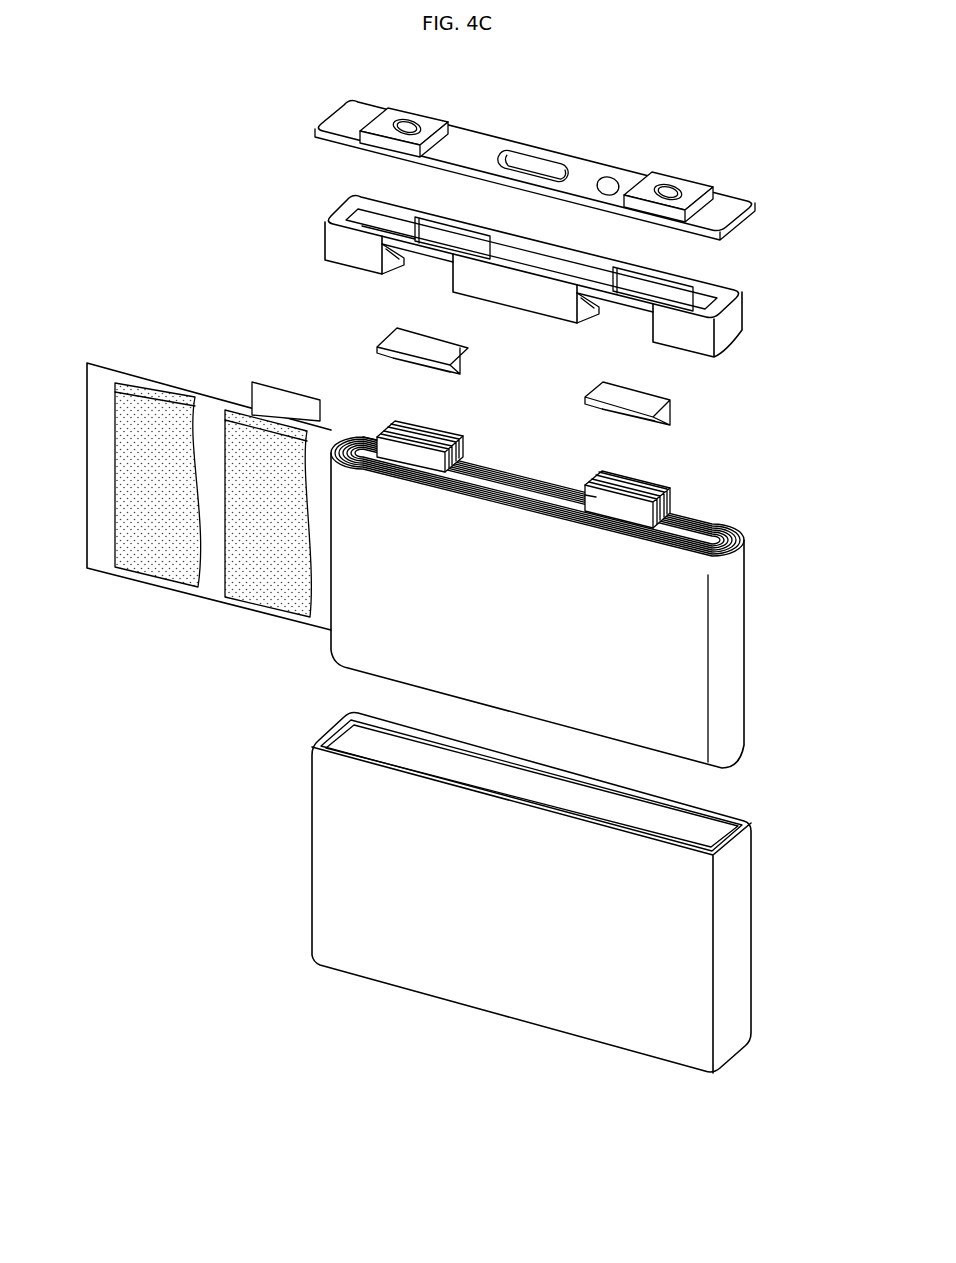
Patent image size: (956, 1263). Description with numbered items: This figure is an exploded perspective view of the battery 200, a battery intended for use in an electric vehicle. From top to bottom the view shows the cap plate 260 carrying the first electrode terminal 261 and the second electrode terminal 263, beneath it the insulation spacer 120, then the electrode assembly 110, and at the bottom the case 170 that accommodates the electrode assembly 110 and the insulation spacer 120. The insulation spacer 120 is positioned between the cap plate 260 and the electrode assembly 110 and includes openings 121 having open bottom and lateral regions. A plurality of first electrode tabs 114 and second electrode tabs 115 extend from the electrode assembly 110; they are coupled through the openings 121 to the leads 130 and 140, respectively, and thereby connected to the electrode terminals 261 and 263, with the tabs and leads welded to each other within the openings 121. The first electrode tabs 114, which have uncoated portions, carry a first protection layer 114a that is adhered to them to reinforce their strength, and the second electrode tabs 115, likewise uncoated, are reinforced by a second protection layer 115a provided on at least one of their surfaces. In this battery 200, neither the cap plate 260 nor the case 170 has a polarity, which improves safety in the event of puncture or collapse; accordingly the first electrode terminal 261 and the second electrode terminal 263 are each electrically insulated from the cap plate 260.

The battery 200 is at (774, 110).
The cap plate 260 is at (542, 147).
The first electrode terminal 261 is at (428, 122).
The second electrode terminal 263 is at (695, 186).
The insulation spacer 120 is at (759, 316).
The openings 121 is at (416, 272).
The lead 130 is at (468, 357).
The lead 140 is at (676, 410).
The electrode assembly 110 is at (751, 598).
The first electrode tabs 114 is at (433, 431).
The first protection layer 114a is at (362, 436).
The second electrode tabs 115 is at (267, 396).
The second protection layer 115a is at (297, 405).
The case 170 is at (749, 925).